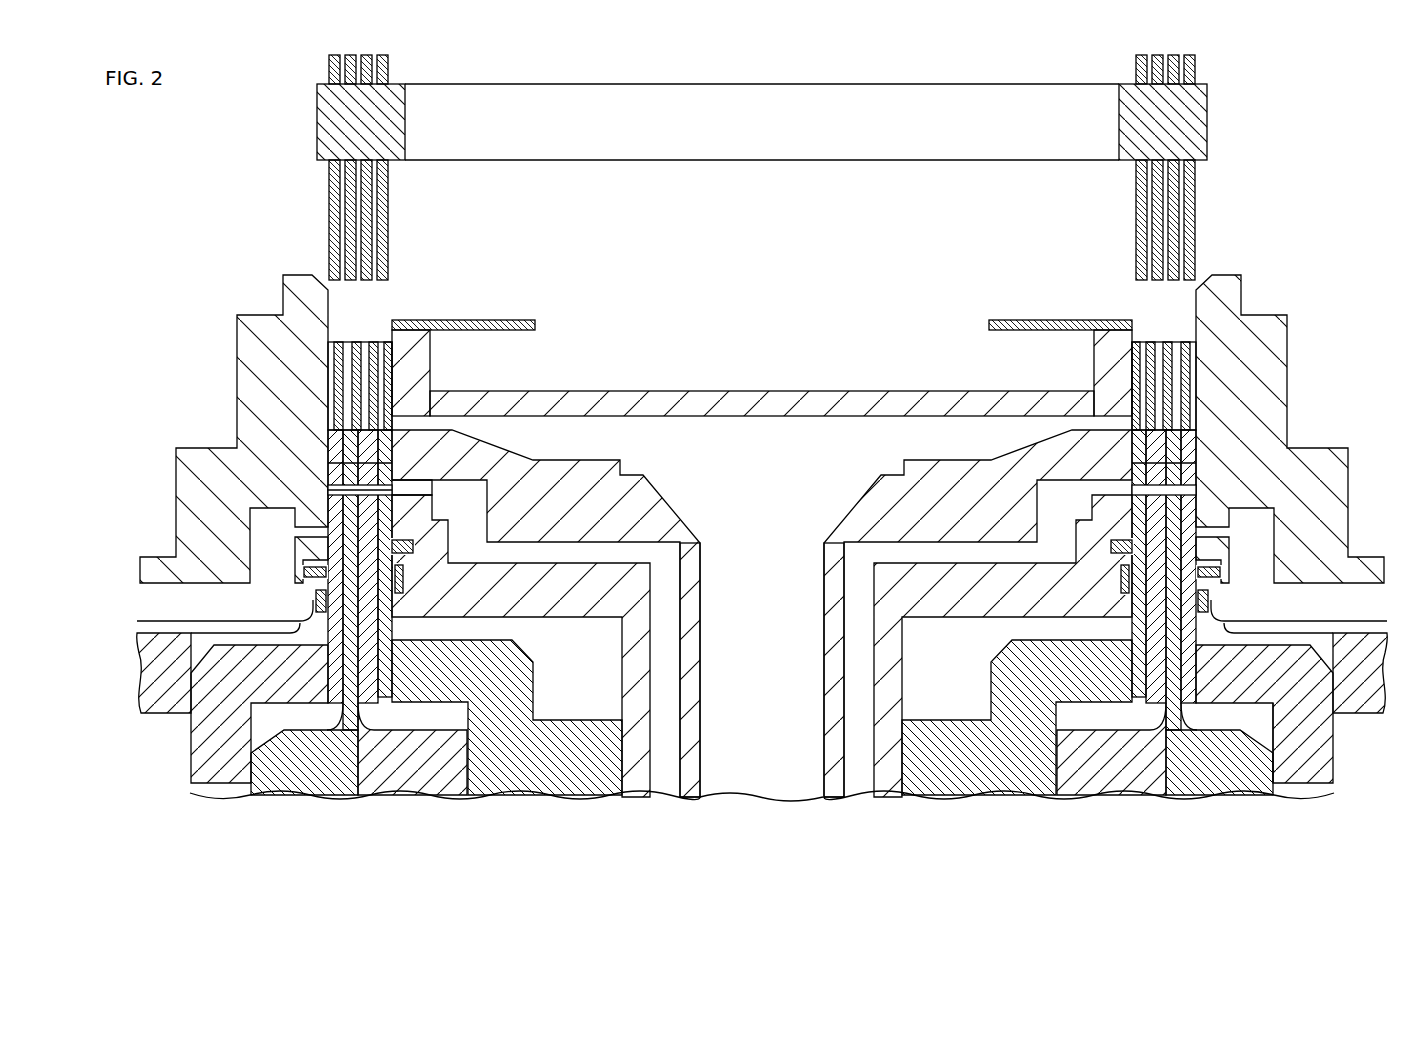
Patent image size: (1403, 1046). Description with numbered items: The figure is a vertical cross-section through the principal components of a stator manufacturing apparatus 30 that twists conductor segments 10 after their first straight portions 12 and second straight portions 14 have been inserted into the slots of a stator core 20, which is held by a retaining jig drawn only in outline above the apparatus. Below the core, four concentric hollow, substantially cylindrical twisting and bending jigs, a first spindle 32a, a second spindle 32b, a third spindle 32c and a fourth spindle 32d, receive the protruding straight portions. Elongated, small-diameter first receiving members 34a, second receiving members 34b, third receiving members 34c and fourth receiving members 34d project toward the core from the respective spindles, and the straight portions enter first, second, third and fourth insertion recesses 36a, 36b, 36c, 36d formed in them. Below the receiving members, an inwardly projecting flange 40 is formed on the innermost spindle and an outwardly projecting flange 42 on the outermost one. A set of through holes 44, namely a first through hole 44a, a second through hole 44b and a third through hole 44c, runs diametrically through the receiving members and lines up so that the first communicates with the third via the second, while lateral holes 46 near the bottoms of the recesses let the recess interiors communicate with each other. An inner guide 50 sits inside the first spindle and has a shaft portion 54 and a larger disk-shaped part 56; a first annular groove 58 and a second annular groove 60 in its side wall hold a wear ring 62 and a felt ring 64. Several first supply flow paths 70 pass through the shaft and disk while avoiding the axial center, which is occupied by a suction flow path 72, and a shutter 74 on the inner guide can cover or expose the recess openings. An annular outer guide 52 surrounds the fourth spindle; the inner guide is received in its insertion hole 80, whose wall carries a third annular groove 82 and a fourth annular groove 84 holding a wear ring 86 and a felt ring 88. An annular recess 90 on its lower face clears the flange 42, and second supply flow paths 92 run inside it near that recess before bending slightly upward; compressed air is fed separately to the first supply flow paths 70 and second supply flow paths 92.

The segment 10 is at (306, 72).
The first straight portion 12 is at (380, 215).
The second straight portion 14 is at (328, 215).
The stator core 20 is at (771, 160).
The stator manufacturing apparatus 30 is at (1357, 104).
The first spindle 32a is at (960, 770).
The second spindle 32b is at (1098, 790).
The third spindle 32c is at (1185, 797).
The fourth spindle 32d is at (1285, 770).
The first receiving member 34a is at (350, 398).
The second receiving member 34b is at (350, 380).
The third receiving member 34c is at (336, 360).
The fourth receiving member 34d is at (333, 350).
The first insertion recess 36a is at (1143, 358).
The second insertion recess 36b is at (1158, 367).
The third insertion recess 36c is at (1175, 388).
The fourth insertion recess 36d is at (1192, 410).
The flange 40 is at (1030, 672).
The flange 42 is at (1297, 665).
The first holding block 44 is at (546, 563).
The first through hole 44a is at (387, 492).
The second through hole 44b is at (367, 490).
The third through hole 44c is at (352, 487).
The lateral hole 46 is at (352, 420).
The inner guide 50 is at (621, 807).
The outer guide 52 is at (1340, 495).
The shaft portion 54 is at (887, 785).
The disk-shaped part 56 is at (785, 400).
The first annular groove 58 is at (398, 595).
The second annular groove 60 is at (405, 555).
The wear ring 62 is at (1128, 556).
The felt ring 64 is at (1125, 595).
The first supply flow path 70 is at (655, 790).
The suction flow path 72 is at (823, 673).
The shutter 74 is at (505, 319).
The insertion hole 80 is at (1140, 463).
The third annular groove 82 is at (1203, 612).
The fourth annular groove 84 is at (1207, 578).
The wear ring 86 is at (320, 612).
The felt ring 88 is at (308, 578).
The annular recess 90 is at (237, 633).
The second supply flow path 92 is at (143, 628).